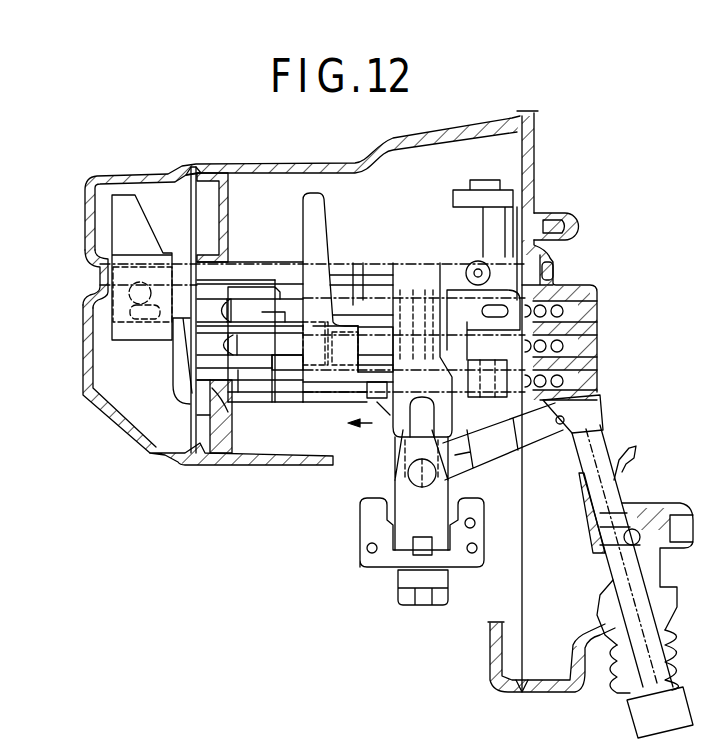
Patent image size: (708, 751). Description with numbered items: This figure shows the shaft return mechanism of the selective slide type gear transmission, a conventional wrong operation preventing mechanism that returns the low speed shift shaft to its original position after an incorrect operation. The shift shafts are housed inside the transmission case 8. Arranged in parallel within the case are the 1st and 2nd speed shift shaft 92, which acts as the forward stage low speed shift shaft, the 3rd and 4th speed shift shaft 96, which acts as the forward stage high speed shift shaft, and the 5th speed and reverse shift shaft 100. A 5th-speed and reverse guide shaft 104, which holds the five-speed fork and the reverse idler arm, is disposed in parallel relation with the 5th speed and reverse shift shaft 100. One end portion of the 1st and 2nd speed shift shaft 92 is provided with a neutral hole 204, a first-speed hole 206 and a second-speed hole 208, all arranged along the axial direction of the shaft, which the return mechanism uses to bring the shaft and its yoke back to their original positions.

The transmission case 8 is at (565, 200).
The 1st and 2nd speed shift shaft 92 is at (292, 392).
The 3rd and 4th speed shift shaft 96 is at (285, 338).
The 5th speed and reverse shift shaft 100 is at (362, 305).
The 5th-speed and reverse guide shaft 104 is at (435, 263).
The neutral hole 204 is at (547, 437).
The first-speed hole 206 is at (512, 440).
The second-speed hole 208 is at (597, 390).